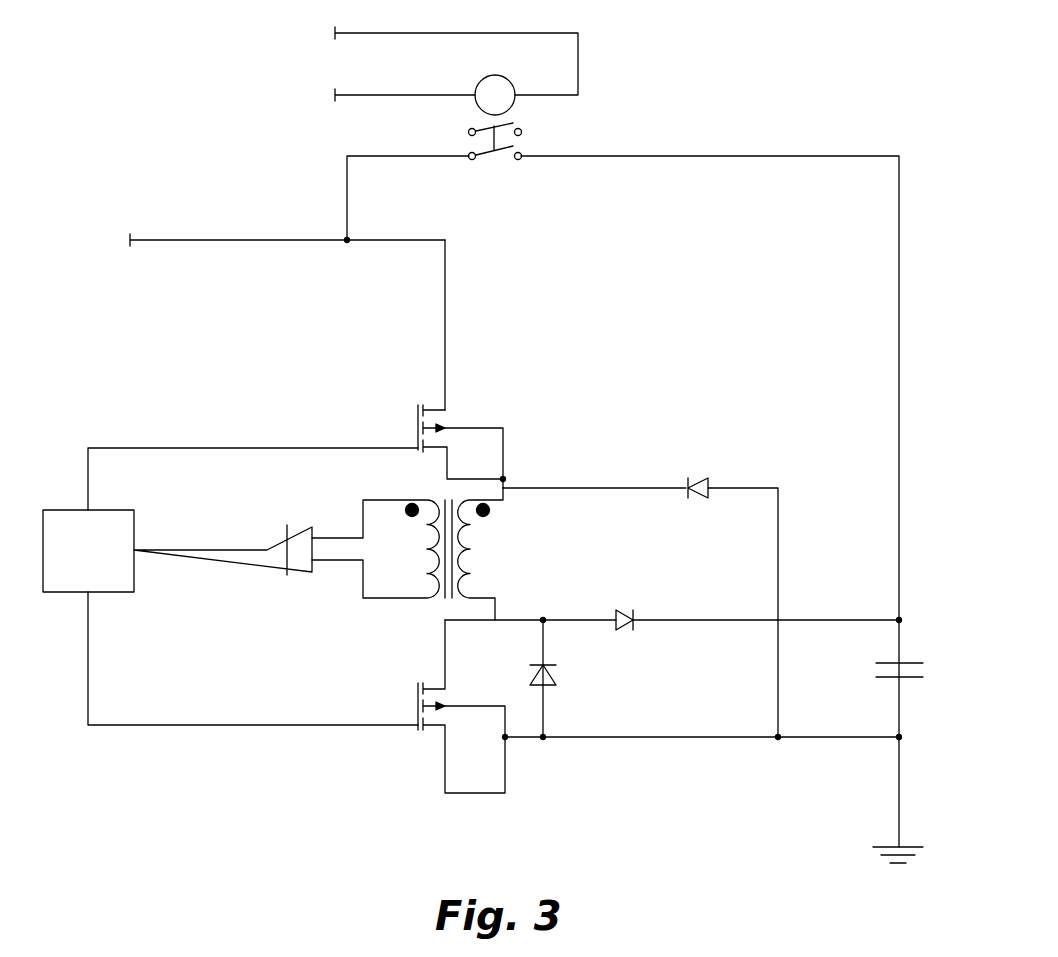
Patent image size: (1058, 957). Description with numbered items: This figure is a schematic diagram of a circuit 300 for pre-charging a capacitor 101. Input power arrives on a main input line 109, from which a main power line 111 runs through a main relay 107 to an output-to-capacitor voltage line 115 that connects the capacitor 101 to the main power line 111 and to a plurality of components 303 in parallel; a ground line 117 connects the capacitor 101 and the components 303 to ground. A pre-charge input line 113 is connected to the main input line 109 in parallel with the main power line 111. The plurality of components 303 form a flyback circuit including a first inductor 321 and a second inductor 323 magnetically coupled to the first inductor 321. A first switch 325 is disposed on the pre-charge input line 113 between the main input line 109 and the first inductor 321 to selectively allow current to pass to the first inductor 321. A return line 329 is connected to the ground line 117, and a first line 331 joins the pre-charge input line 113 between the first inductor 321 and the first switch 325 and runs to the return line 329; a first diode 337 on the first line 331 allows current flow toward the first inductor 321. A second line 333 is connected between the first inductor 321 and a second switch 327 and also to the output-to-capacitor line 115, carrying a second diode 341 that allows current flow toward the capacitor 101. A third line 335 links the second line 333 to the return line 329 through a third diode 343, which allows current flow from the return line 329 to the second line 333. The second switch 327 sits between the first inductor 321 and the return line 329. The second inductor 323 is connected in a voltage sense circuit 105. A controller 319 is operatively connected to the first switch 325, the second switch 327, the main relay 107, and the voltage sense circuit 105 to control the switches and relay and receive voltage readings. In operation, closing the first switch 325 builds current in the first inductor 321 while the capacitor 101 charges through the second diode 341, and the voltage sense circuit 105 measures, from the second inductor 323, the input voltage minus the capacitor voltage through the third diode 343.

The circuit 300 is at (190, 24).
The main relay 107 is at (470, 152).
The main power line 111 is at (718, 155).
The main input line 109 is at (190, 243).
The pre-charge input line 113 is at (444, 300).
The first switch 325 is at (440, 405).
The first line 331 is at (598, 485).
The first diode 337 is at (710, 480).
The first inductor 321 is at (478, 598).
The second inductor 323 is at (420, 600).
The voltage sense circuit 105 is at (270, 572).
The controller 319 is at (74, 563).
The second line 333 is at (738, 618).
The second diode 341 is at (626, 632).
The third line 335 is at (541, 630).
The third diode 343 is at (552, 688).
The second switch 327 is at (420, 730).
The return line 329 is at (696, 739).
The output-to-capacitor voltage line 115 is at (900, 631).
The capacitor 101 is at (908, 680).
The ground line 117 is at (899, 795).
The plurality of components 303 is at (668, 432).